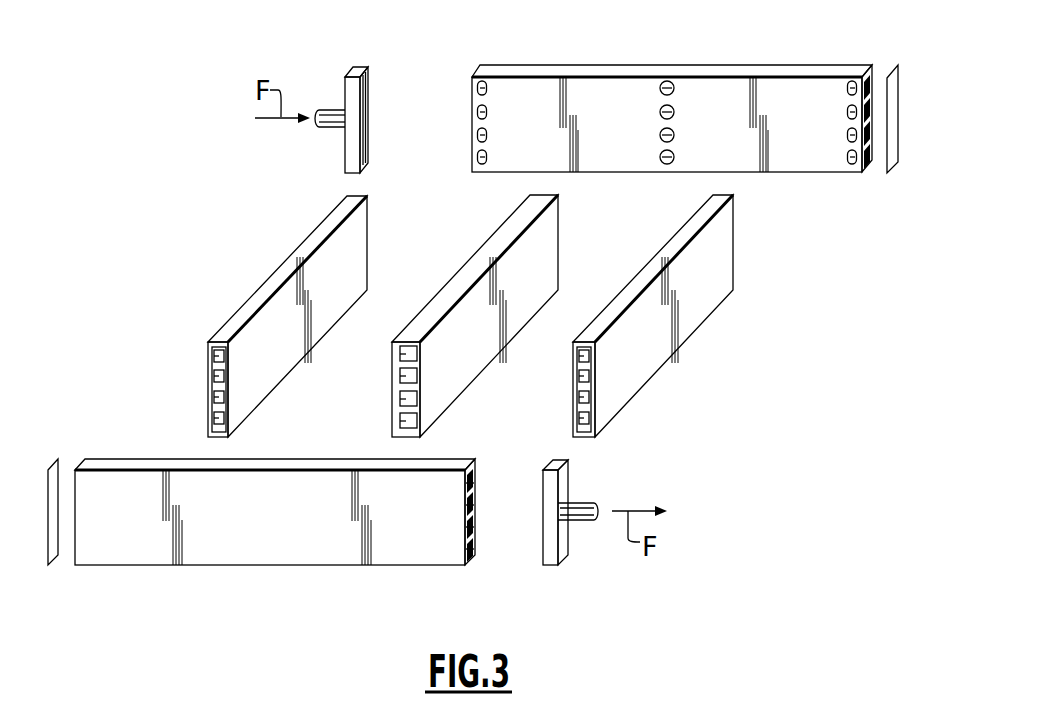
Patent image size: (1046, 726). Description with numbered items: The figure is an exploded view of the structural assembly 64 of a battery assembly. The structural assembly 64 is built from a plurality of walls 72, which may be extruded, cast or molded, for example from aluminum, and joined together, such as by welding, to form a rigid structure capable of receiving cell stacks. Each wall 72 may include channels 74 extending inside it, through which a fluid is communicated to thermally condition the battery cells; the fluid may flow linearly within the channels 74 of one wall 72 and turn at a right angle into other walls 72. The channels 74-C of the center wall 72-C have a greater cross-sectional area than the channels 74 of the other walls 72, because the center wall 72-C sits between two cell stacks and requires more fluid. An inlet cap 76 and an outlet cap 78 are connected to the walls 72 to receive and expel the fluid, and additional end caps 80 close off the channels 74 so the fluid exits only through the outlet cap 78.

The structural assembly 64 is at (192, 144).
The wall 72 is at (600, 75).
The center wall 72-C is at (552, 257).
The channel 74 is at (487, 88).
The channel of the center wall 74-C is at (400, 354).
The inlet cap 76 is at (357, 68).
The outlet cap 78 is at (563, 548).
The end cap 80 is at (893, 100).